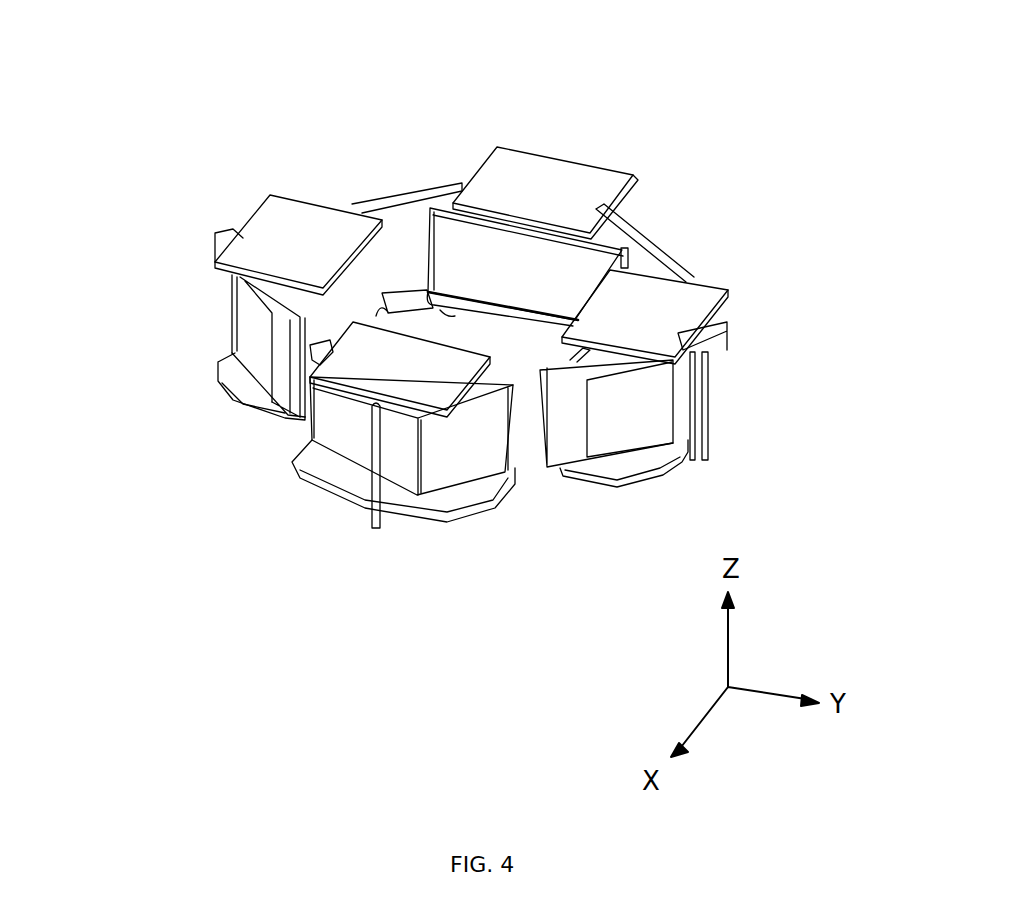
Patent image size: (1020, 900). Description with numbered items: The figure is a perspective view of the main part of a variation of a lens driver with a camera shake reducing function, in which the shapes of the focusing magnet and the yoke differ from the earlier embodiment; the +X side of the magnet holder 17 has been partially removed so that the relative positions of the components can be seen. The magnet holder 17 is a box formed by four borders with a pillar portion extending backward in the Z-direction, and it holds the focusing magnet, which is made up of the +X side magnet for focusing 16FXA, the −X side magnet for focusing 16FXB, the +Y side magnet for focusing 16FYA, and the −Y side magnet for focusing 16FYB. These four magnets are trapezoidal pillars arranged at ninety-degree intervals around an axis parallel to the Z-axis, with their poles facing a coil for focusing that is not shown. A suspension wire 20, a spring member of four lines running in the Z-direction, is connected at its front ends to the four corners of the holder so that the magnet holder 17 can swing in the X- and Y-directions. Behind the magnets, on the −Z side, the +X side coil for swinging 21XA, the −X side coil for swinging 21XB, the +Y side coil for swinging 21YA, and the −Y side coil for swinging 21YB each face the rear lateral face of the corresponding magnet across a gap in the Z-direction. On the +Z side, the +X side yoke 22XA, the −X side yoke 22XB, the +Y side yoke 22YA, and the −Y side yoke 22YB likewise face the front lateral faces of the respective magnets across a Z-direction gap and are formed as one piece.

The magnet holder 17 is at (402, 223).
The suspension wire 20 is at (382, 465).
The +X side coil for swinging 21XA is at (322, 477).
The −X side coil for swinging 21XB is at (478, 316).
The +Y side coil for swinging 21YA is at (638, 463).
The −Y side coil for swinging 21YB is at (247, 378).
The +X side yoke 22XA is at (473, 473).
The −X side yoke 22XB is at (552, 180).
The +Y side yoke 22YA is at (667, 310).
The −Y side yoke 22YB is at (288, 237).
The +X side magnet for focusing 16FXA is at (325, 418).
The −X side magnet for focusing 16FXB is at (557, 268).
The +Y side magnet for focusing 16FYA is at (647, 407).
The −Y side magnet for focusing 16FYB is at (258, 327).